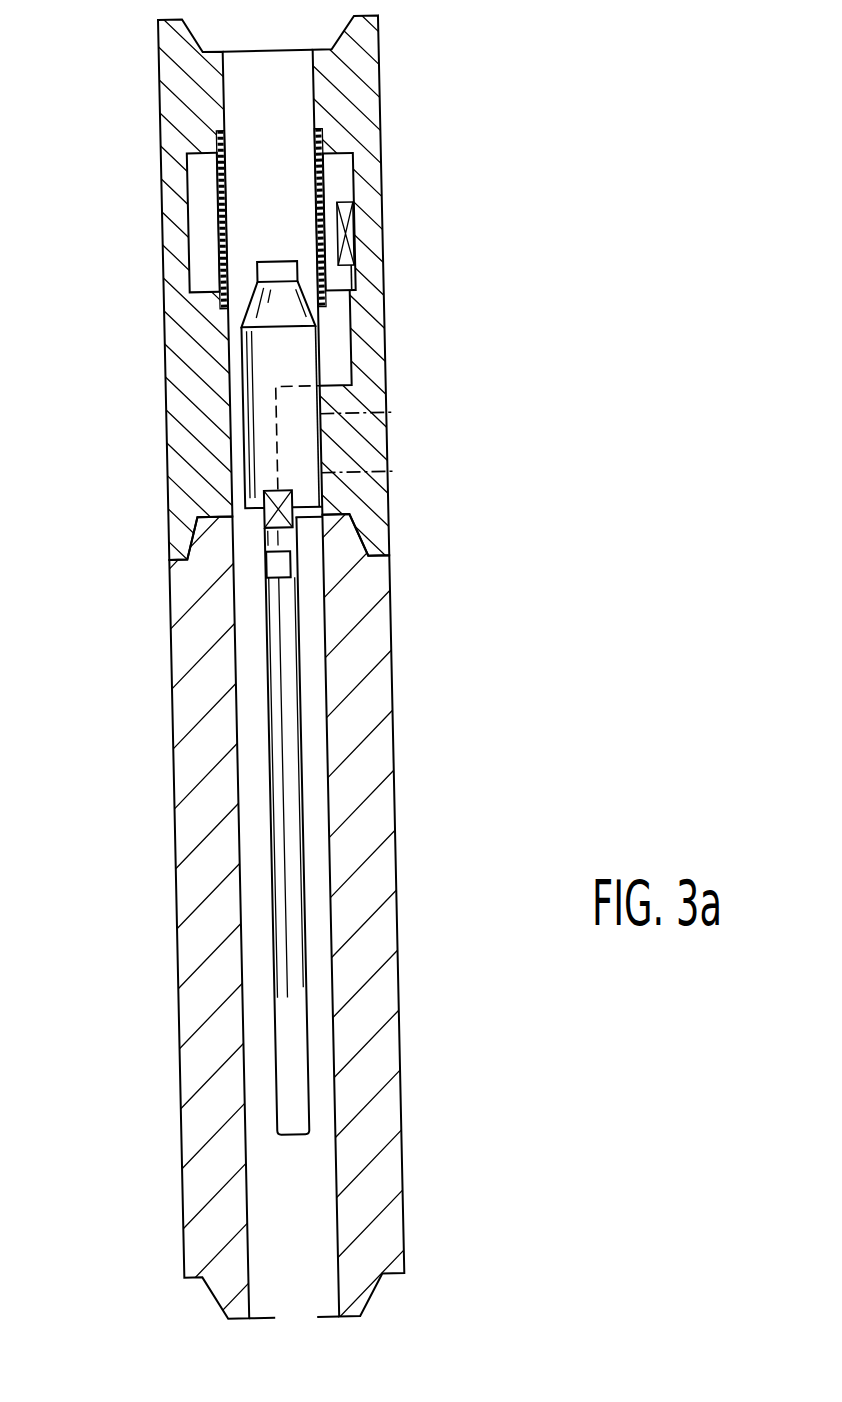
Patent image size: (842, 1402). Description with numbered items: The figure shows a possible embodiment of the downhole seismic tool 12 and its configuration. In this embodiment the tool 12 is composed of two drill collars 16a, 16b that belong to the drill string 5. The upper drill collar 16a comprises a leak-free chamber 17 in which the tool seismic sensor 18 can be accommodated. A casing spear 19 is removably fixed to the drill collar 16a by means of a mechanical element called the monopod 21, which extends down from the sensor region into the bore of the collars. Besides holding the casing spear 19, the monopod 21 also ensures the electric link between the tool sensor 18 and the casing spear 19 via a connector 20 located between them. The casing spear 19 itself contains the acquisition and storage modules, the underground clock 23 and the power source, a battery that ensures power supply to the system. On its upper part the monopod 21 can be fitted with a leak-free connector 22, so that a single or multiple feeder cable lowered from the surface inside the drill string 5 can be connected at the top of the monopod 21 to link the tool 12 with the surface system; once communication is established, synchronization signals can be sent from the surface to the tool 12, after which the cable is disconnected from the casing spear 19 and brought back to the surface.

The drill string 5 is at (289, 909).
The seismic tool 12 is at (261, 319).
The drill collar 16a is at (168, 352).
The drill collar 16b is at (396, 826).
The leak-free chamber 17 is at (198, 221).
The seismic sensor 18 is at (352, 262).
The casing spear 19 is at (306, 1067).
The connector 20 is at (297, 517).
The monopod 21 is at (253, 458).
The leak-free connector 22 is at (277, 268).
The underground clock 23 is at (278, 565).